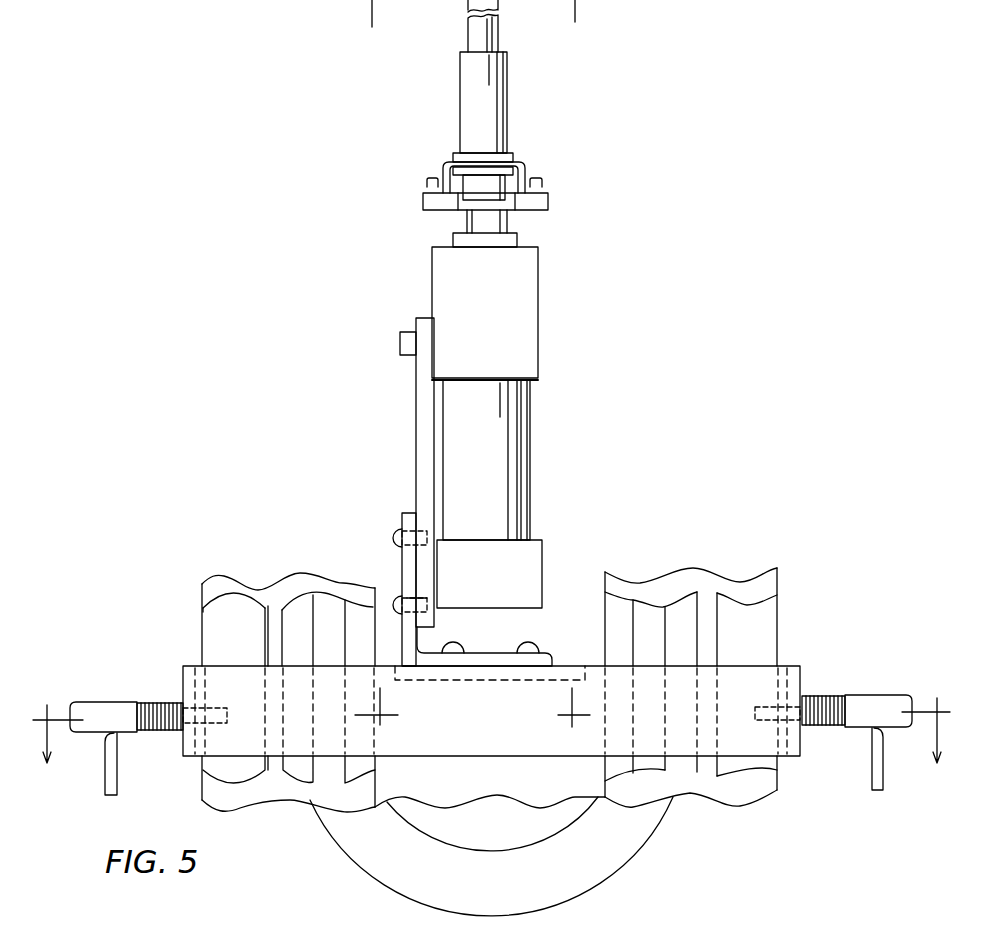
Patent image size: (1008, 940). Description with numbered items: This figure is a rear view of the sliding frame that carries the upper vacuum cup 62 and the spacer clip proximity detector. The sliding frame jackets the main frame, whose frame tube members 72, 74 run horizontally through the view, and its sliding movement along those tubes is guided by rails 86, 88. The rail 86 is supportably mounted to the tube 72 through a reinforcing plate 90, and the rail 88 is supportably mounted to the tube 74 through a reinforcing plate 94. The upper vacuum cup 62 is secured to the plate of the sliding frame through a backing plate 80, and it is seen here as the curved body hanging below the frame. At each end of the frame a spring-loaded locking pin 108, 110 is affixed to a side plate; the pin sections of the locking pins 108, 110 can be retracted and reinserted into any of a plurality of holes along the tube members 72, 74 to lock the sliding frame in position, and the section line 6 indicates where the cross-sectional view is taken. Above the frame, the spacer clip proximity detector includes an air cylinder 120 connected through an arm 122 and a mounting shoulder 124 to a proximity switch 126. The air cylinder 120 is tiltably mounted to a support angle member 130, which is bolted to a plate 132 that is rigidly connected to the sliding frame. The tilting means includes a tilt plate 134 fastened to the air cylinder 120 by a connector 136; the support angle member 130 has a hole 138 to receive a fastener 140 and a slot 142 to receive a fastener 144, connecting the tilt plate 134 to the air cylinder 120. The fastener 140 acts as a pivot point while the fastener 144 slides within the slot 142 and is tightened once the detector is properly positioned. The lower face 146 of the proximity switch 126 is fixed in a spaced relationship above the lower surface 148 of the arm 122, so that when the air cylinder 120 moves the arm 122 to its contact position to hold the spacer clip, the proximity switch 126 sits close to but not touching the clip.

The section line 6- 6 is at (491, 744).
The upper vacuum cup 62 is at (342, 852).
The frame tube member 72 is at (205, 763).
The frame tube member 74 is at (783, 758).
The backing plate 80 is at (587, 813).
The rail 86 is at (302, 773).
The rail 88 is at (687, 773).
The reinforcing plate 90 is at (232, 577).
The reinforcing plate 94 is at (762, 572).
The spring-loaded locking pin 108 is at (117, 701).
The spring-loaded locking pin 110 is at (848, 694).
The air cylinder 120 is at (530, 430).
The arm 122 is at (548, 203).
The mounting shoulder 124 is at (527, 165).
The proximity switch 126 is at (507, 95).
The support angle member 130 is at (490, 652).
The plate 132 is at (565, 666).
The tilt plate 134 is at (416, 395).
The connector 136 is at (400, 345).
The hole 138 is at (407, 513).
The fastener 140 is at (392, 538).
The slot 142 is at (407, 598).
The fastener 144 is at (402, 596).
The lower face 146 is at (490, 202).
The lower surface 148 is at (532, 212).